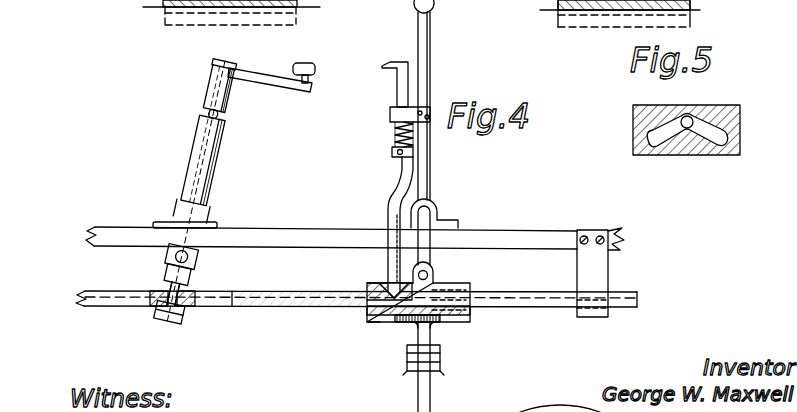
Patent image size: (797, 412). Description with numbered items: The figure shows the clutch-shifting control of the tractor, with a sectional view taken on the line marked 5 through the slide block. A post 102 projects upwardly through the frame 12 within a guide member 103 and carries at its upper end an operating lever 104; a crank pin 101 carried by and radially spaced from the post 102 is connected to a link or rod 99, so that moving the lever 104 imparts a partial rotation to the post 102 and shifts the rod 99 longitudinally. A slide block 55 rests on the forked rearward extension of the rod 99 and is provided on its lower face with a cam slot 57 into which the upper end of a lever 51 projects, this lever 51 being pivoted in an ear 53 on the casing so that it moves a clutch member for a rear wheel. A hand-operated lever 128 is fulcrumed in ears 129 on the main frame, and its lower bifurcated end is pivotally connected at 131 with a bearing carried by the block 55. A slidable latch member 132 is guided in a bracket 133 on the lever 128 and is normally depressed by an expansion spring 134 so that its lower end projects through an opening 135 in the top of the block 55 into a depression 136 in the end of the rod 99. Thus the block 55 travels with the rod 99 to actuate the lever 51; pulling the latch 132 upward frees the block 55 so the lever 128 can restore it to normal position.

In FIG. 4, the frame 12 is at (273, 228).
In FIG. 4, the link 99 is at (103, 302).
In FIG. 4, the crank pin 101 is at (178, 308).
In FIG. 4, the post 102 is at (203, 115).
In FIG. 4, the guide member 103 is at (215, 152).
In FIG. 4, the lever 104 is at (257, 82).
In FIG. 4, the hand-operated lever 128 is at (431, 22).
In FIG. 4, the ears 129 is at (438, 203).
In FIG. 4, the pivotal connection 131 is at (427, 270).
In FIG. 4, the slidable latch member 132 is at (400, 187).
In FIG. 4, the bracket 133 is at (396, 92).
In FIG. 4, the expansion spring 134 is at (395, 133).
In FIG. 4, the openings 135 is at (385, 283).
In FIG. 4, the depressions 136 is at (367, 321).
In FIG. 4, the slide block 55 is at (458, 288).
In FIG. 5, the slide block 55 is at (740, 127).
In FIG. 4, the cam slot 57 is at (395, 320).
In FIG. 5, the cam slot 57 is at (716, 140).
In FIG. 4, the lever 51 is at (430, 330).
In FIG. 5, the lever 51 is at (686, 128).
In FIG. 4, the ear 53 is at (440, 374).
In FIG. 4, the section line 5- 5 is at (333, 293).